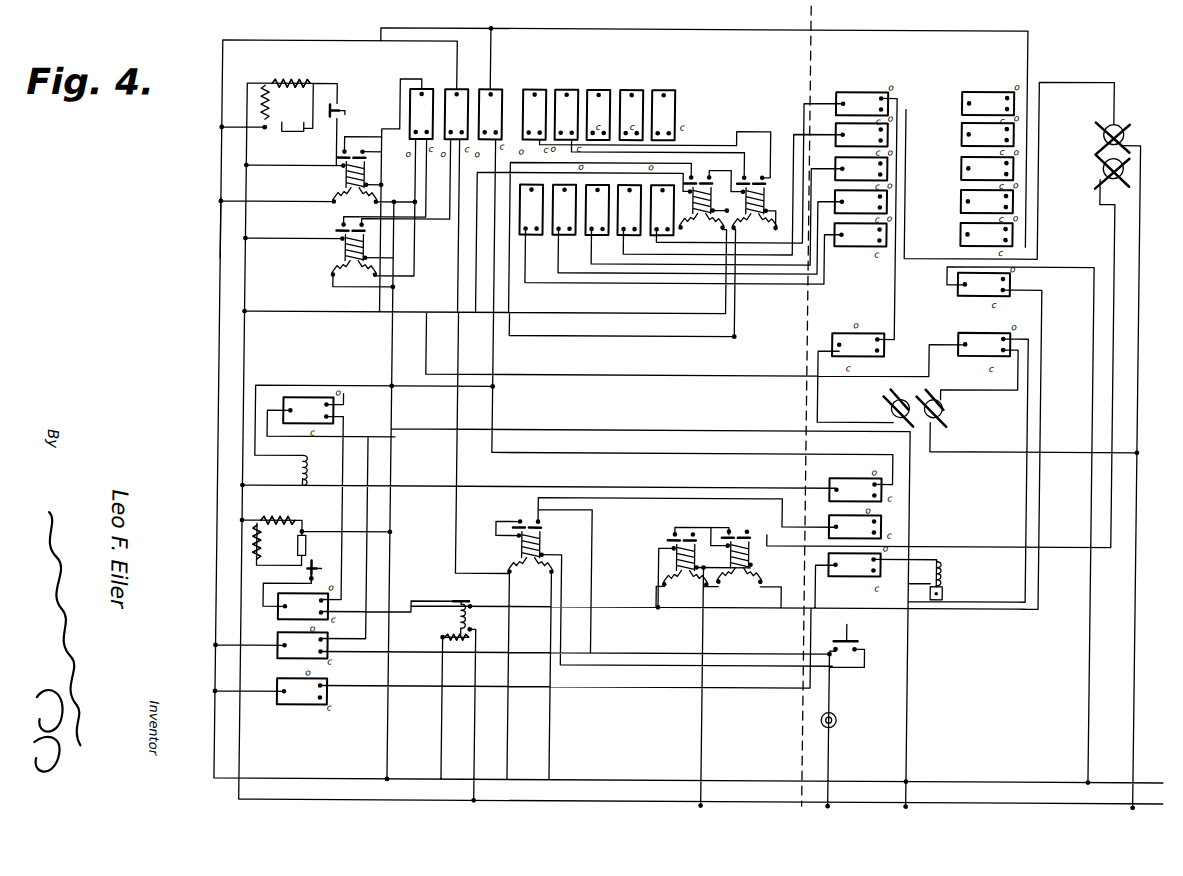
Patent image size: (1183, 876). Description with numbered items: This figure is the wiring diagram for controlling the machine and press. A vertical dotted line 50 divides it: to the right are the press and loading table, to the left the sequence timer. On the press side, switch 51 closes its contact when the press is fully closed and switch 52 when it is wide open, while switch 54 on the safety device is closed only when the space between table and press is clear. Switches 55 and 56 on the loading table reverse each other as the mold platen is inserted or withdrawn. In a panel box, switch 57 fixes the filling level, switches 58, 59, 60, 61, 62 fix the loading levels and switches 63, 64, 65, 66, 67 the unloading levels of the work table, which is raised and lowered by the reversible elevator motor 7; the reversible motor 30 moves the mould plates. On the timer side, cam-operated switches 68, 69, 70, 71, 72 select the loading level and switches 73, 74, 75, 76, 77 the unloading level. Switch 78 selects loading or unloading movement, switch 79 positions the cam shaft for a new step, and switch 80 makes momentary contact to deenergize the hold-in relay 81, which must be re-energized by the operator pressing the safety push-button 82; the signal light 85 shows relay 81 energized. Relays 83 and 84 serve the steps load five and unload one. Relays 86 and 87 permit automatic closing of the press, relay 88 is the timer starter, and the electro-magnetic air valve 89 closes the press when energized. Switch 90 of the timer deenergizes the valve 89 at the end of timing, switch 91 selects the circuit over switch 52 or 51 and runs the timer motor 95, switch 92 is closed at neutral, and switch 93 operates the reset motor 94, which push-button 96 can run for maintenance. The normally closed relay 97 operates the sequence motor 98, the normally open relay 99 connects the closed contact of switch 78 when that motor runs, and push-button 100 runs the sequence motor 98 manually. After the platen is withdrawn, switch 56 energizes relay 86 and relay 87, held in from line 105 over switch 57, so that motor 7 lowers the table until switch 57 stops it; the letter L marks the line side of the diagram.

The motor 7 is at (1120, 140).
The reversible motor 30 is at (941, 420).
The vertical dotted line 50 is at (802, 712).
The switch 51 is at (852, 490).
The switch 52 is at (852, 527).
The switch 54 is at (851, 565).
The switch 55 is at (855, 345).
The switch 56 is at (981, 345).
The switch 57 is at (981, 285).
The switch 58 is at (857, 235).
The switch 59 is at (858, 202).
The switch 60 is at (858, 169).
The switch 61 is at (859, 135).
The switch 62 is at (859, 104).
The switch 63 is at (983, 235).
The switch 64 is at (984, 202).
The switch 65 is at (984, 169).
The switch 66 is at (985, 135).
The switch 67 is at (985, 104).
The switch 68 is at (530, 209).
The switch 69 is at (563, 209).
The switch 70 is at (596, 209).
The switch 71 is at (628, 209).
The switch 72 is at (661, 209).
The switch 73 is at (533, 114).
The switch 74 is at (565, 114).
The switch 75 is at (597, 114).
The switch 76 is at (630, 114).
The switch 77 is at (662, 114).
The switch 78 is at (420, 113).
The switch 79 is at (489, 113).
The switch 80 is at (455, 113).
The hold-in relay 81 is at (539, 546).
The safety push-button 82 is at (855, 640).
The relay 83 is at (706, 202).
The relay 84 is at (759, 202).
The signal light 85 is at (840, 716).
The relay 86 is at (674, 553).
The relay 87 is at (750, 556).
The starter relay 88 is at (454, 619).
The electro-magnetic air valve 89 is at (945, 572).
The switch 90 is at (299, 691).
The switch 91 is at (299, 645).
The switch 92 is at (300, 606).
The switch 93 is at (305, 410).
The reset motor 94 is at (268, 522).
The timer motor 95 is at (309, 478).
The push-button 96 is at (322, 574).
The normally closed relay 97 is at (334, 176).
The sequence motor 98 is at (300, 81).
The normally open relay 99 is at (332, 249).
The push-button 100 is at (340, 104).
The line 105 is at (218, 228).
The line L is at (808, 318).